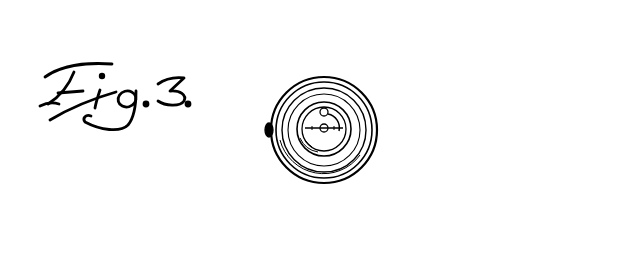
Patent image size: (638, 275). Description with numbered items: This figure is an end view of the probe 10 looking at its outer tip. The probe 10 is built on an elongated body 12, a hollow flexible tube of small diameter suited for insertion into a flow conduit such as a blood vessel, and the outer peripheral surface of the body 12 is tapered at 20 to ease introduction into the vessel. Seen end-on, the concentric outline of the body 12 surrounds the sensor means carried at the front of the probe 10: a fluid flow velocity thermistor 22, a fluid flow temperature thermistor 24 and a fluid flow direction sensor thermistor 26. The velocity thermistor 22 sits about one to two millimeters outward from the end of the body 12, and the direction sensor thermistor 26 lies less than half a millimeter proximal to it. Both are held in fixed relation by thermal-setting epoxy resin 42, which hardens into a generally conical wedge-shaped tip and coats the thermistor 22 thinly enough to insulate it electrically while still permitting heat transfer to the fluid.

The probe 10 is at (280, 75).
The elongated body 12 is at (380, 116).
The taper 20 is at (338, 172).
The fluid flow velocity thermistor 22 is at (320, 132).
The fluid flow temperature thermistor 24 is at (266, 133).
The fluid flow direction sensor thermistor 26 is at (326, 108).
The thermal-setting epoxy resin 42 is at (328, 132).